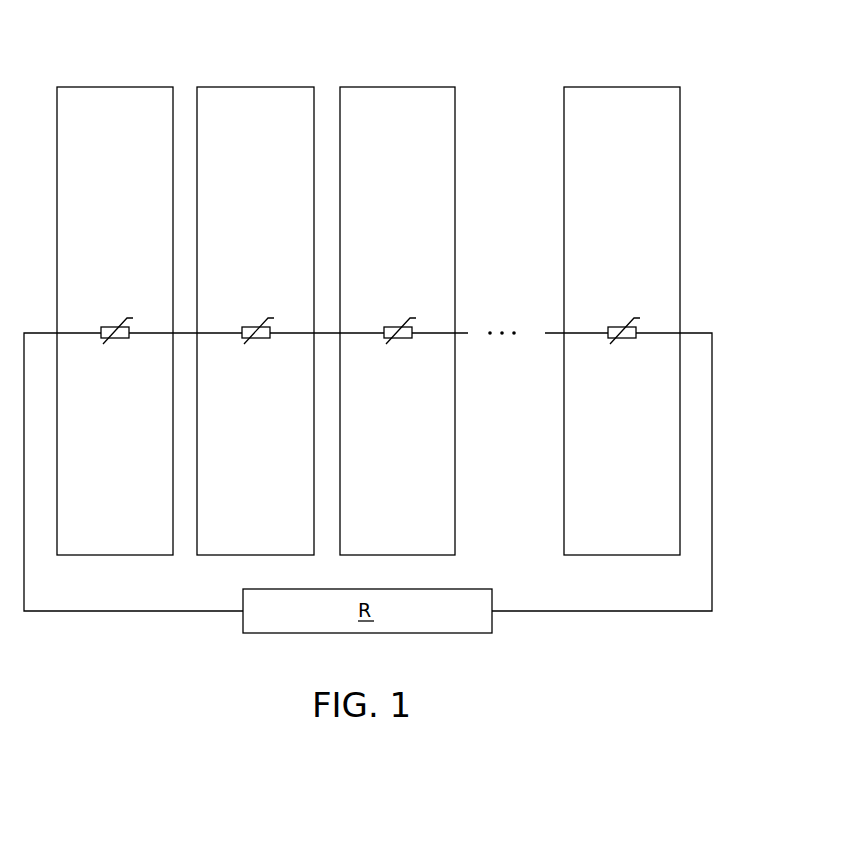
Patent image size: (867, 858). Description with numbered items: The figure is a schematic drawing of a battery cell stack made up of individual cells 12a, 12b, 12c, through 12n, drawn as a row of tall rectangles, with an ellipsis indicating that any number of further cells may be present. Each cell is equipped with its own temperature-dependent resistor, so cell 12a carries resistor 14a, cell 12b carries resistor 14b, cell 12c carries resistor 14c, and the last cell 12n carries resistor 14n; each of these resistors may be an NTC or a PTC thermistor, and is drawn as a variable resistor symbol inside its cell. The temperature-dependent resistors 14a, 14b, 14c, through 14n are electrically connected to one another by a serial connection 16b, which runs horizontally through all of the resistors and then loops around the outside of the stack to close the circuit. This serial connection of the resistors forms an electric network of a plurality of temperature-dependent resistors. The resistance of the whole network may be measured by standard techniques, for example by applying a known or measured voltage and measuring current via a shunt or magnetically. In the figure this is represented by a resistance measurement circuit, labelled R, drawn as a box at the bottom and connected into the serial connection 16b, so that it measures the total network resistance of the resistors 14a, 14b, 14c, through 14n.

The individual cell 12a is at (113, 87).
The individual cell 12b is at (255, 87).
The individual cell 12c is at (396, 87).
The individual cell 12n is at (620, 87).
The temperature-dependent resistor 14a is at (118, 348).
The temperature-dependent resistor 14b is at (259, 348).
The temperature-dependent resistor 14c is at (401, 348).
The temperature-dependent resistor 14n is at (625, 348).
The serial connection 16b is at (712, 403).